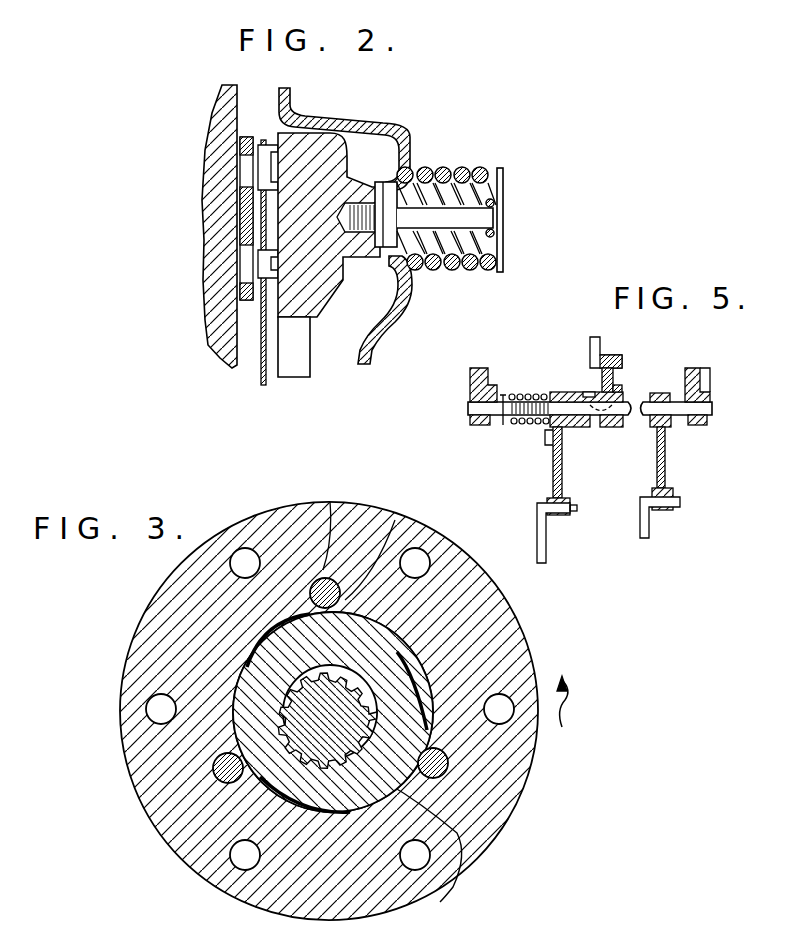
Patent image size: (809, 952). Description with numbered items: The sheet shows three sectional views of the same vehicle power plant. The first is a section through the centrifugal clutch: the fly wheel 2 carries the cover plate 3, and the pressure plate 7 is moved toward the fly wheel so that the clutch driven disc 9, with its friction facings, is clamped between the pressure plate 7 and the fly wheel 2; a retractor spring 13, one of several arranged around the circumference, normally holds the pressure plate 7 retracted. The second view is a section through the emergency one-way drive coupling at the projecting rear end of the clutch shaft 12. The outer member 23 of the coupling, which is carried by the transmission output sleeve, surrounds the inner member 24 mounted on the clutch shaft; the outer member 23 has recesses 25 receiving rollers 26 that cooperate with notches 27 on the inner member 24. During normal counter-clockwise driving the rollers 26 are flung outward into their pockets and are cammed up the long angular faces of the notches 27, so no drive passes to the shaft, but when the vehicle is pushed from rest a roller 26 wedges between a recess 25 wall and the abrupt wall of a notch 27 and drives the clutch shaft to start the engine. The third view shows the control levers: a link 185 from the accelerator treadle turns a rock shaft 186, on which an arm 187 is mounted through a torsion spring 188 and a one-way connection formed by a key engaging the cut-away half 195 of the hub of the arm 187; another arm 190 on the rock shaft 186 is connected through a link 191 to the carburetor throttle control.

In FIG. 2, the fly wheel 2 is at (222, 118).
In FIG. 2, the cover plate 3 is at (355, 118).
In FIG. 2, the pressure plate 7 is at (320, 303).
In FIG. 2, the clutch driven disc 9 is at (243, 288).
In FIG. 2, the retractor spring 13 is at (445, 163).
In FIG. 3, the projecting end of clutch shaft 12 is at (333, 712).
In FIG. 3, the outer member of one-way drive coupling 23 is at (510, 640).
In FIG. 3, the inner member of one-way drive coupling 24 is at (462, 868).
In FIG. 3, the recesses 25 is at (357, 603).
In FIG. 3, the rollers 26 is at (322, 578).
In FIG. 3, the notches 27 is at (340, 675).
In FIG. 5, the link 185 is at (613, 377).
In FIG. 5, the rock shaft 186 is at (712, 410).
In FIG. 5, the arm 187 is at (563, 466).
In FIG. 5, the torsion spring 188 is at (530, 428).
In FIG. 5, the arm 190 is at (666, 470).
In FIG. 5, the link 191 is at (648, 532).
In FIG. 5, the cut-away half of arm hub 195 is at (590, 390).